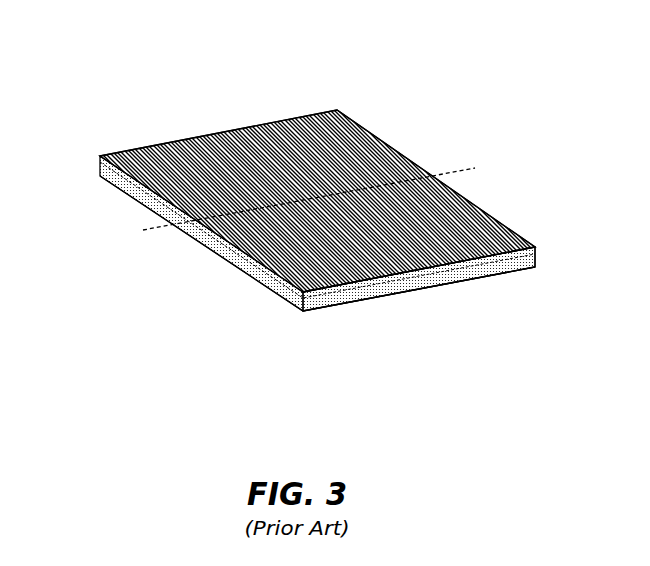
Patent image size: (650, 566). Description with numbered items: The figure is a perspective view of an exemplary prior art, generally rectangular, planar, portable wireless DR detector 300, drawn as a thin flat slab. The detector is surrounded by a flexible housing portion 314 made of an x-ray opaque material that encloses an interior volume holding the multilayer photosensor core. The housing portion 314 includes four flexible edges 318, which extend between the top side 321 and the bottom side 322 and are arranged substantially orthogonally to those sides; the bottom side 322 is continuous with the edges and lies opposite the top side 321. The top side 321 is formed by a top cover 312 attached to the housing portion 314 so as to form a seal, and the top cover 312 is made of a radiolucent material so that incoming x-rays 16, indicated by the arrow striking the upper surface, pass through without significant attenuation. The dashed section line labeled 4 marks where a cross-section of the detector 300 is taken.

The DR detector 300 is at (87, 123).
The x-rays 16 is at (283, 177).
The top cover 312 is at (270, 245).
The housing portion 314 is at (393, 287).
The flexible edges 318 is at (199, 137).
The top side 321 is at (475, 261).
The bottom side 322 is at (322, 316).
The section line 4- 4 is at (143, 230).